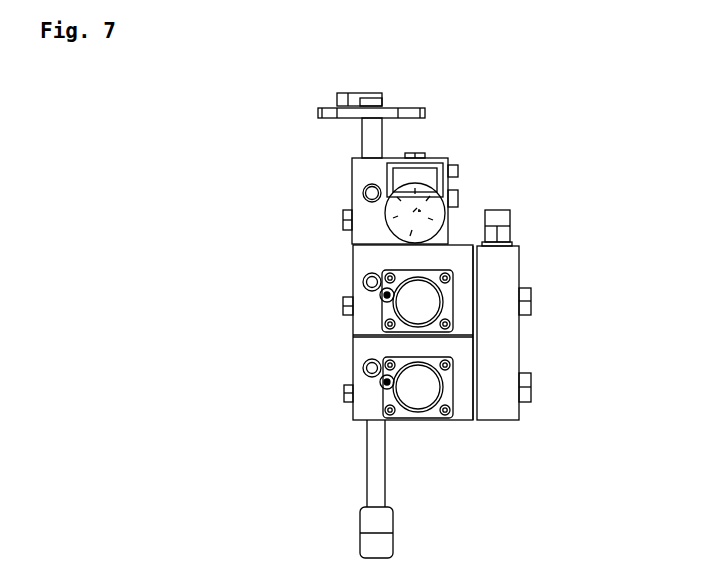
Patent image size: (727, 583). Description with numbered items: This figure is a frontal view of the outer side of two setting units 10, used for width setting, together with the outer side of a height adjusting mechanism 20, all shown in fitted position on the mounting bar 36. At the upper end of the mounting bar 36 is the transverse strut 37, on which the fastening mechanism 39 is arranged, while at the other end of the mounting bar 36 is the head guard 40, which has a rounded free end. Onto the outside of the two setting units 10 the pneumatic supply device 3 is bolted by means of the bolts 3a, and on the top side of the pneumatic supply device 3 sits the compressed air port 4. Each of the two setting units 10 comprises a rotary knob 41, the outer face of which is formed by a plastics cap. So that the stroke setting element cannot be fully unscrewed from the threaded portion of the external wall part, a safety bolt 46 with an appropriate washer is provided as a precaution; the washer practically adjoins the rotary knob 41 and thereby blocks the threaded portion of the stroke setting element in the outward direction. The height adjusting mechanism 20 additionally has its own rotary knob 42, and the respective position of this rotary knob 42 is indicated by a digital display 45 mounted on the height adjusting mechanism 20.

The pneumatic supply device 3 is at (513, 266).
The bolts 3a is at (531, 300).
The compressed air port 4 is at (510, 213).
The setting unit 10 is at (298, 311).
The height adjusting mechanism 20 is at (294, 224).
The mounting bar 36 is at (362, 135).
The transverse strut 37 is at (410, 108).
The fastening mechanism 39 is at (355, 93).
The head guard 40 is at (384, 520).
The rotary knob 41 is at (433, 304).
The rotary knob 42 is at (440, 217).
The digital display 45 is at (432, 180).
The safety bolt 46 is at (384, 297).